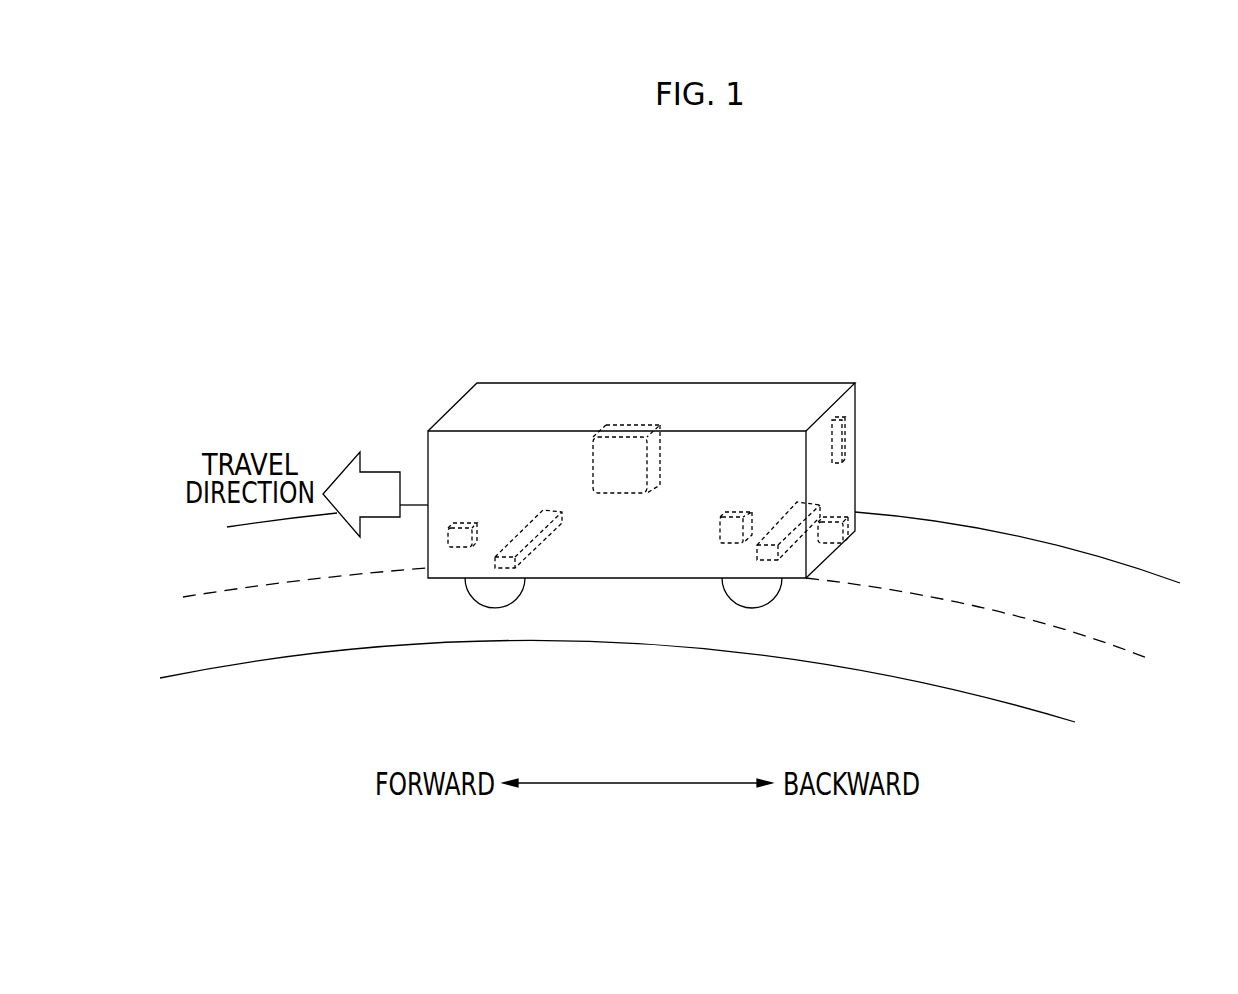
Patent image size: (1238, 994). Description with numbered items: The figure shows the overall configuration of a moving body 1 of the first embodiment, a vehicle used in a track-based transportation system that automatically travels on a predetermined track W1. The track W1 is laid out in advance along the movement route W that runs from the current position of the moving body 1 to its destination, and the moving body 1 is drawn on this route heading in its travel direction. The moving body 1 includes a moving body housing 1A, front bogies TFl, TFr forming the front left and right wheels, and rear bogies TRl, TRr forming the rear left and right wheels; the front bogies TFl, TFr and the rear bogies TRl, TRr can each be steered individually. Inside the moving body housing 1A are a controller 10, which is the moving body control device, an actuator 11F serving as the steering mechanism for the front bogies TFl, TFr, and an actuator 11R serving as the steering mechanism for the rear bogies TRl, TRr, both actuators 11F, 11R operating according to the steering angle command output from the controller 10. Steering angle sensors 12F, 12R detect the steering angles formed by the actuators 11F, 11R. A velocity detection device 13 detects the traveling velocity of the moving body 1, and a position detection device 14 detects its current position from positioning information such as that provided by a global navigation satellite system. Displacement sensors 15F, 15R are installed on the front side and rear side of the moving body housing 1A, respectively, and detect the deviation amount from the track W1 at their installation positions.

The moving body 1 is at (669, 500).
The moving body housing 1A is at (803, 383).
The controller 10 is at (631, 425).
The actuator 11F is at (546, 633).
The steering angle sensor 12F is at (548, 542).
The actuator 11R is at (821, 610).
The steering angle sensor 12R is at (787, 553).
The velocity detection device 13 is at (718, 524).
The position detection device 14 is at (843, 438).
The displacement sensor 15F is at (457, 547).
The displacement sensor 15R is at (837, 516).
The front bogie TFl is at (493, 609).
The front bogie TFr is at (607, 579).
The rear bogie TRl is at (750, 609).
The rear bogie TRr is at (838, 548).
The movement route W is at (1110, 582).
The track W1 is at (990, 607).